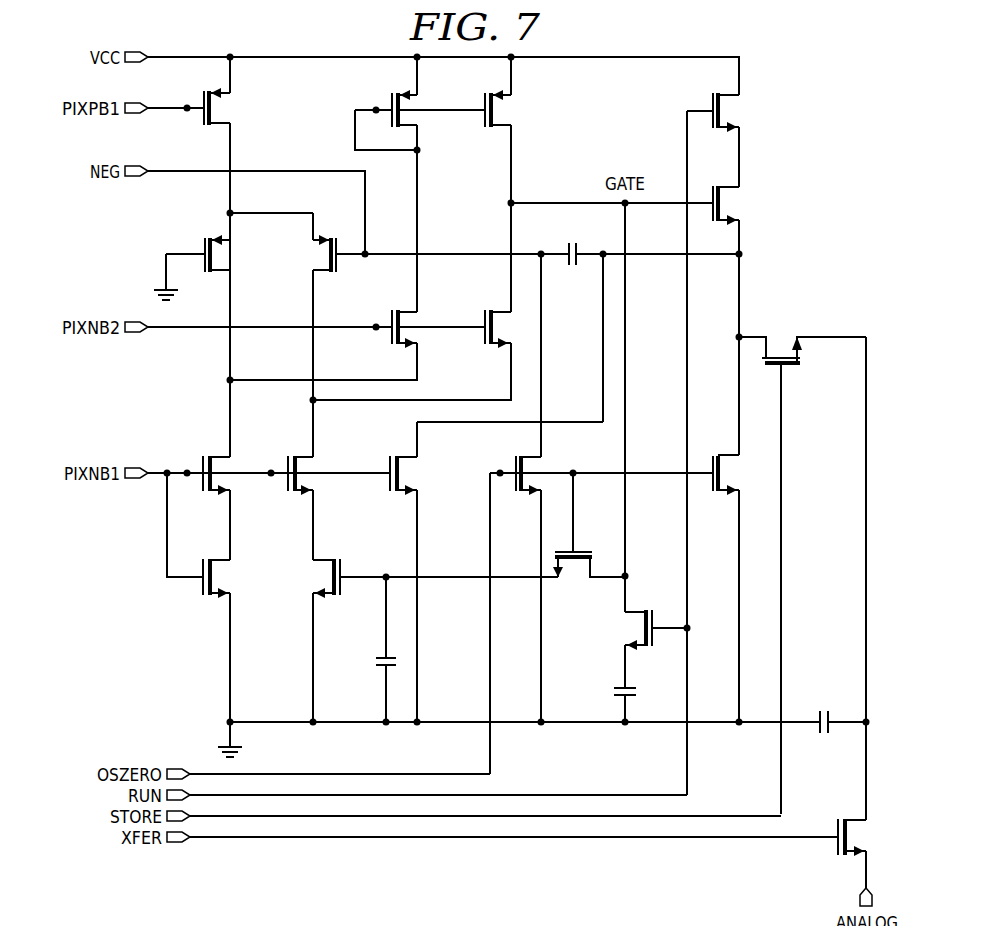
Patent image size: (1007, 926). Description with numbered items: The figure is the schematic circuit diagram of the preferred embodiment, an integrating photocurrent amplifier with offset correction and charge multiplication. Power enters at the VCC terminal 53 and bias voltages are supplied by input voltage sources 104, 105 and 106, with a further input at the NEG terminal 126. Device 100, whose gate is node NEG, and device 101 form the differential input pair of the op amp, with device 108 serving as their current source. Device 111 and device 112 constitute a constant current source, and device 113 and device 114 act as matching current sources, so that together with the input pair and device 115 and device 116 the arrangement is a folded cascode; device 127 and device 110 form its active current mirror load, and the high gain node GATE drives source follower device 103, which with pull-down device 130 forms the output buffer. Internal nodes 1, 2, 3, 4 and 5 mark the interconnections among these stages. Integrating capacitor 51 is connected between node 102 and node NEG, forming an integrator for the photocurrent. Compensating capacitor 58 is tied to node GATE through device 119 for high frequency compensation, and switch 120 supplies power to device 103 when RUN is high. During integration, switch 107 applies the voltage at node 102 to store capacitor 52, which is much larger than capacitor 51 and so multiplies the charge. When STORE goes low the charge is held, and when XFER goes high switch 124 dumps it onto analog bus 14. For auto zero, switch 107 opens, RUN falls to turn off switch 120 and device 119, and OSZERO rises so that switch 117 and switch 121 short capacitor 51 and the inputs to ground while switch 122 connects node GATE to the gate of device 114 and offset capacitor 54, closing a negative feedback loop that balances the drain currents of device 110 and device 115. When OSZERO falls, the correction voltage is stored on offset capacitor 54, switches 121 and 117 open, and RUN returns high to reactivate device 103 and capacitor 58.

The VCC supply input terminal 53 is at (128, 52).
The input voltage source 104 is at (133, 102).
The NEG input terminal 126 is at (130, 168).
The input voltage source 106 is at (132, 337).
The input voltage source 105 is at (132, 483).
The current source device 108 is at (203, 117).
The active current mirror load device 127 is at (413, 102).
The active current mirror load device 110 is at (505, 113).
The switch 120 is at (712, 102).
The source follower device 103 is at (737, 207).
The node 102 is at (745, 255).
The differential input device 101 is at (202, 252).
The differential input device 100 is at (317, 262).
The cascode device 116 is at (390, 320).
The cascode device 115 is at (485, 338).
The integrating capacitor 51 is at (574, 270).
The constant current source device 111 is at (223, 467).
The current source device 113 is at (313, 465).
The current source pull down device 130 is at (418, 468).
The switch 121 is at (540, 465).
The switch 117 is at (723, 500).
The constant current source device 112 is at (215, 605).
The current source device 114 is at (315, 574).
The offset capacitor 54 is at (380, 650).
The switch 122 is at (578, 548).
The device 119 is at (630, 628).
The compensating capacitor 58 is at (618, 682).
The switch 107 is at (790, 367).
The store capacitor 52 is at (825, 705).
The switch 124 is at (835, 840).
The analog bus 14 is at (858, 900).
The node 1 is at (323, 369).
The node 2 is at (412, 390).
The node 3 is at (238, 525).
The node 4 is at (322, 525).
The node 5 is at (633, 666).